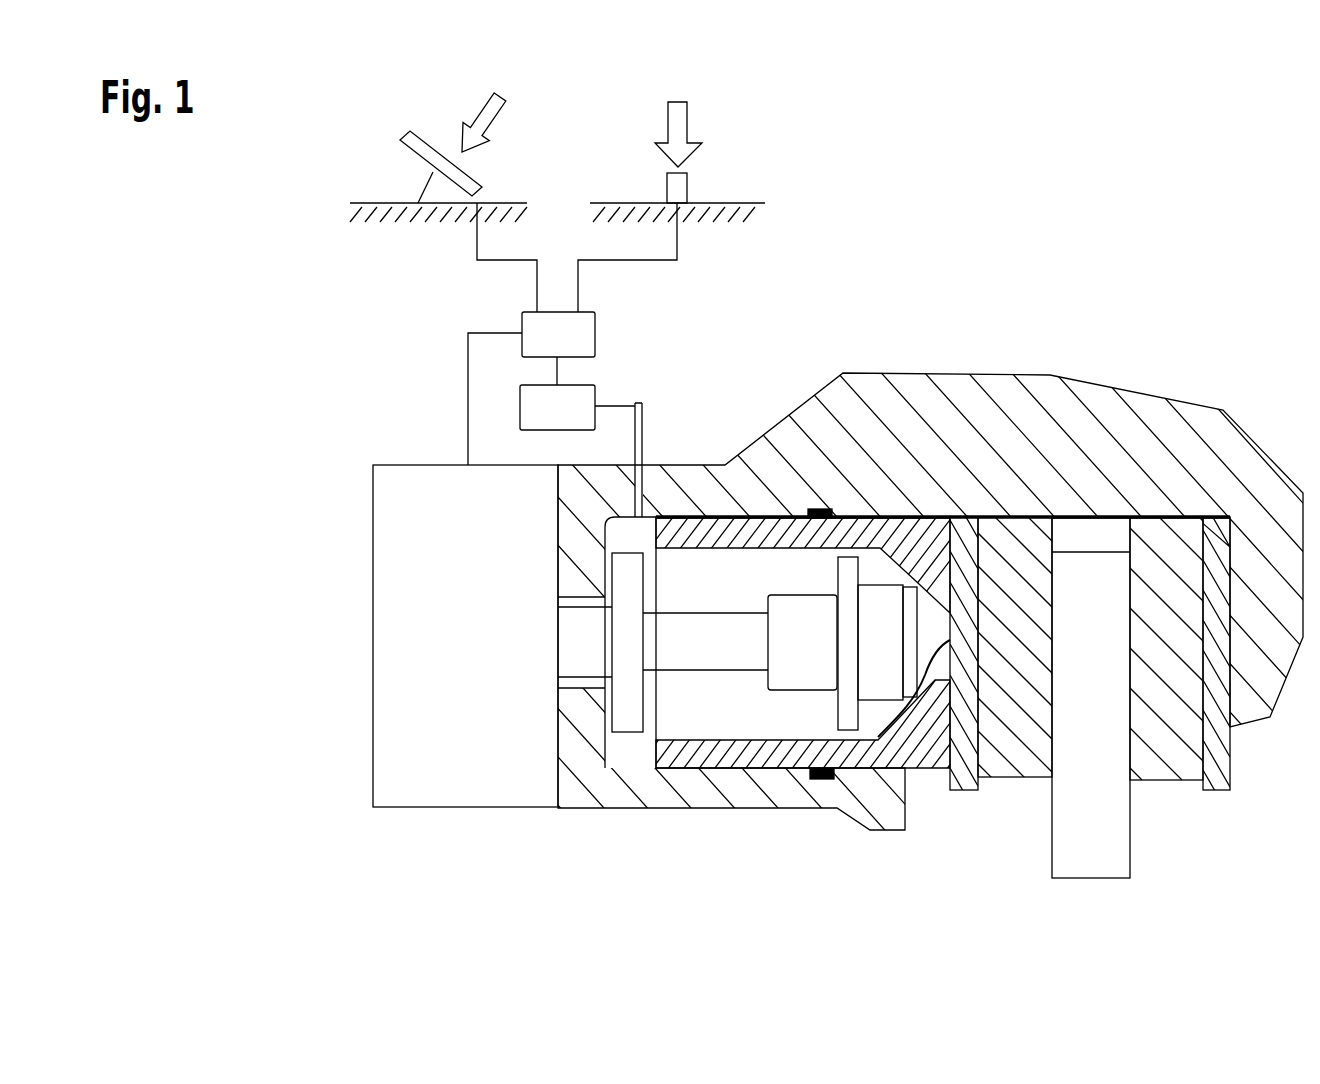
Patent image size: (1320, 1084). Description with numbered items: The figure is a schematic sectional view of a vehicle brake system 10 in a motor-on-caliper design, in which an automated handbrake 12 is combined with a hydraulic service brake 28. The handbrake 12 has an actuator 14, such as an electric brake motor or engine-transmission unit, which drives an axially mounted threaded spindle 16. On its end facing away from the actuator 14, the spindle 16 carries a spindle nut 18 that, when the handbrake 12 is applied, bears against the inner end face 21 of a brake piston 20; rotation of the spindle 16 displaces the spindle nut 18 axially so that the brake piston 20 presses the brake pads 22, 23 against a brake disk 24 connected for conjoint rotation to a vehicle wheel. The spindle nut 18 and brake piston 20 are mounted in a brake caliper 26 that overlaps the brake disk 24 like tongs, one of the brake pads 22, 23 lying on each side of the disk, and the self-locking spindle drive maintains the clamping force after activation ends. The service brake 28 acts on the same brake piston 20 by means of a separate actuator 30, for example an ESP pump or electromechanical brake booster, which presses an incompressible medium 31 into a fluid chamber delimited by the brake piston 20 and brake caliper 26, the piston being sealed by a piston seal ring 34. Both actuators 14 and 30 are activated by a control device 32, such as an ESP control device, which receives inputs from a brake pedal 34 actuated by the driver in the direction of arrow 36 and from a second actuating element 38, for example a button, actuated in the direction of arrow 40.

The brake system 10 is at (1186, 177).
The automated handbrake 12 is at (364, 823).
The actuator 14 is at (458, 788).
The spindle 16 is at (705, 645).
The spindle nut 18 is at (807, 660).
The brake piston 20 is at (757, 753).
The inner end face 21 is at (940, 653).
The brake pad 22 is at (1013, 767).
The brake pad 23 is at (1165, 757).
The brake disk 24 is at (1097, 820).
The brake caliper 26 is at (953, 390).
The service brake 28 is at (740, 341).
The actuator 30 is at (595, 388).
The medium 31 is at (643, 423).
The control device 32 is at (595, 332).
The piston seal ring 34 is at (400, 135).
The arrow 36 is at (490, 100).
The second actuating element 38 is at (690, 181).
The arrow 40 is at (690, 117).